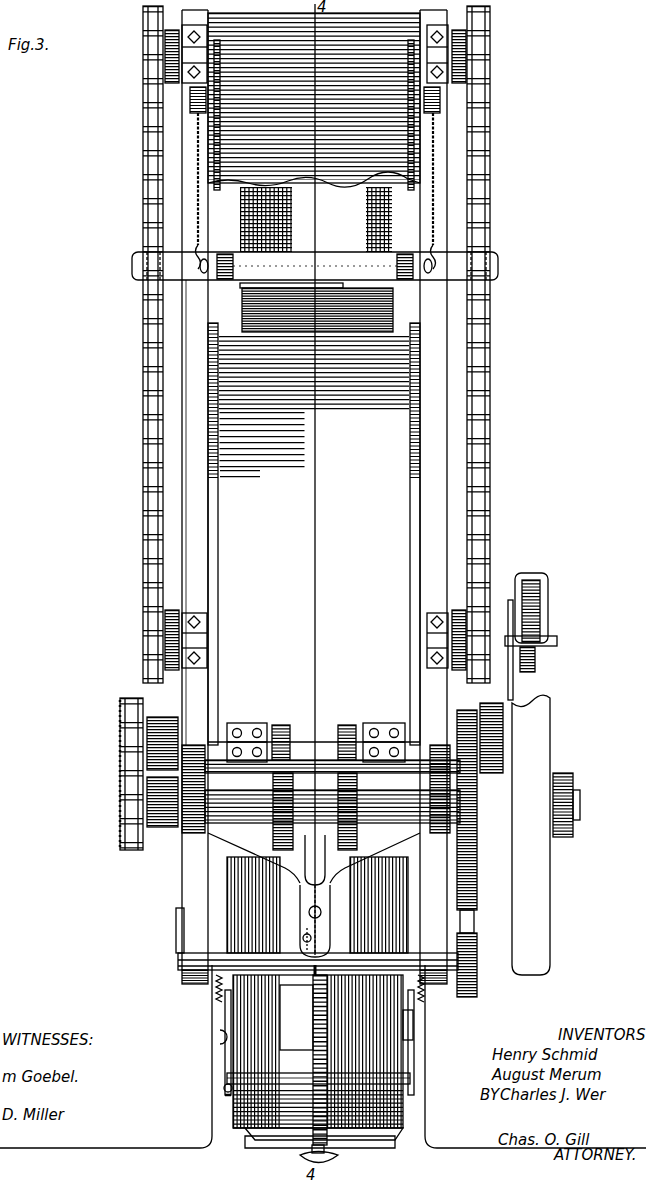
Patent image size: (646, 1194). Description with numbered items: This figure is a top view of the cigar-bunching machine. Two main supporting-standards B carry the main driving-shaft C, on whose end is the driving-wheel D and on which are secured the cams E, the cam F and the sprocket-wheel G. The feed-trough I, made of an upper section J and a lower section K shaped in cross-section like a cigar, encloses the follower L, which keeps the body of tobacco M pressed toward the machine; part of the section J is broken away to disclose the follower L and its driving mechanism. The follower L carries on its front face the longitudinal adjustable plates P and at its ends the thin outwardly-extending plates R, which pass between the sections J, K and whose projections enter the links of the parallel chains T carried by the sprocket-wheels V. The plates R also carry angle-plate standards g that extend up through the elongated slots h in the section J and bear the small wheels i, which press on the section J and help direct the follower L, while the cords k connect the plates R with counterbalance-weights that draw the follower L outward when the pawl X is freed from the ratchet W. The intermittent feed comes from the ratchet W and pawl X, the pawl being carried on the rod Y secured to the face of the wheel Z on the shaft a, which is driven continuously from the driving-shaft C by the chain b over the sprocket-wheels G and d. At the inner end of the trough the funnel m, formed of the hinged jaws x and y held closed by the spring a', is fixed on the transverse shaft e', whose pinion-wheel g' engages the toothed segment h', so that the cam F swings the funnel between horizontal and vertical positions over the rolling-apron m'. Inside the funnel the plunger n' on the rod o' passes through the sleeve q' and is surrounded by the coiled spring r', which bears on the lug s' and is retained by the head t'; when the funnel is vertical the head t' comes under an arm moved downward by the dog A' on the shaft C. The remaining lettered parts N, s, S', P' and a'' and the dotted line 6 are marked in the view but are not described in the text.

The chains T is at (143, 395).
The sprocket-wheels V is at (160, 50).
The lower section of feed-trough K is at (314, 132).
The cords k is at (314, 178).
The outwardly-extending plates R is at (134, 270).
The small wheels i is at (315, 266).
The angle-plate standards g is at (316, 269).
The longitudinal adjustable plates P is at (291, 273).
The follower L is at (315, 266).
The body of tobacco M is at (325, 310).
The upper section of feed-trough J is at (277, 412).
The feed-trough I is at (188, 512).
The elongated slots h is at (314, 534).
The pawl X is at (540, 594).
The ratchet W is at (536, 659).
The rod Y is at (520, 688).
The bearing block N is at (316, 732).
The cams E is at (310, 811).
The main supporting-standards B is at (316, 789).
The shaft a is at (162, 743).
The sprocket-wheel G is at (162, 802).
The sprocket-wheel d is at (141, 774).
The chain b is at (112, 774).
The main driving-shaft C is at (584, 798).
The cam F is at (467, 810).
The wheel Z is at (491, 738).
The driving-wheel D is at (542, 835).
The toothed segment h' is at (477, 921).
The pinion-wheel g' is at (475, 965).
The dog A' is at (314, 859).
The standard s is at (317, 899).
The jaw y is at (303, 920).
The spring a' is at (271, 875).
The funnel m is at (297, 935).
The transverse shaft e' is at (313, 985).
The spring S' is at (317, 992).
The rod P' is at (317, 1042).
The rolling-apron m' is at (333, 1023).
The dotted section line 6 is at (392, 1108).
The jaw x is at (296, 1017).
The coiled spring r' is at (324, 1060).
The lug or plate s' is at (329, 982).
The rod o' is at (318, 1057).
The sleeve q' is at (220, 1089).
The plunger n' is at (221, 1106).
The tray a'' is at (318, 1148).
The head t' is at (326, 1156).